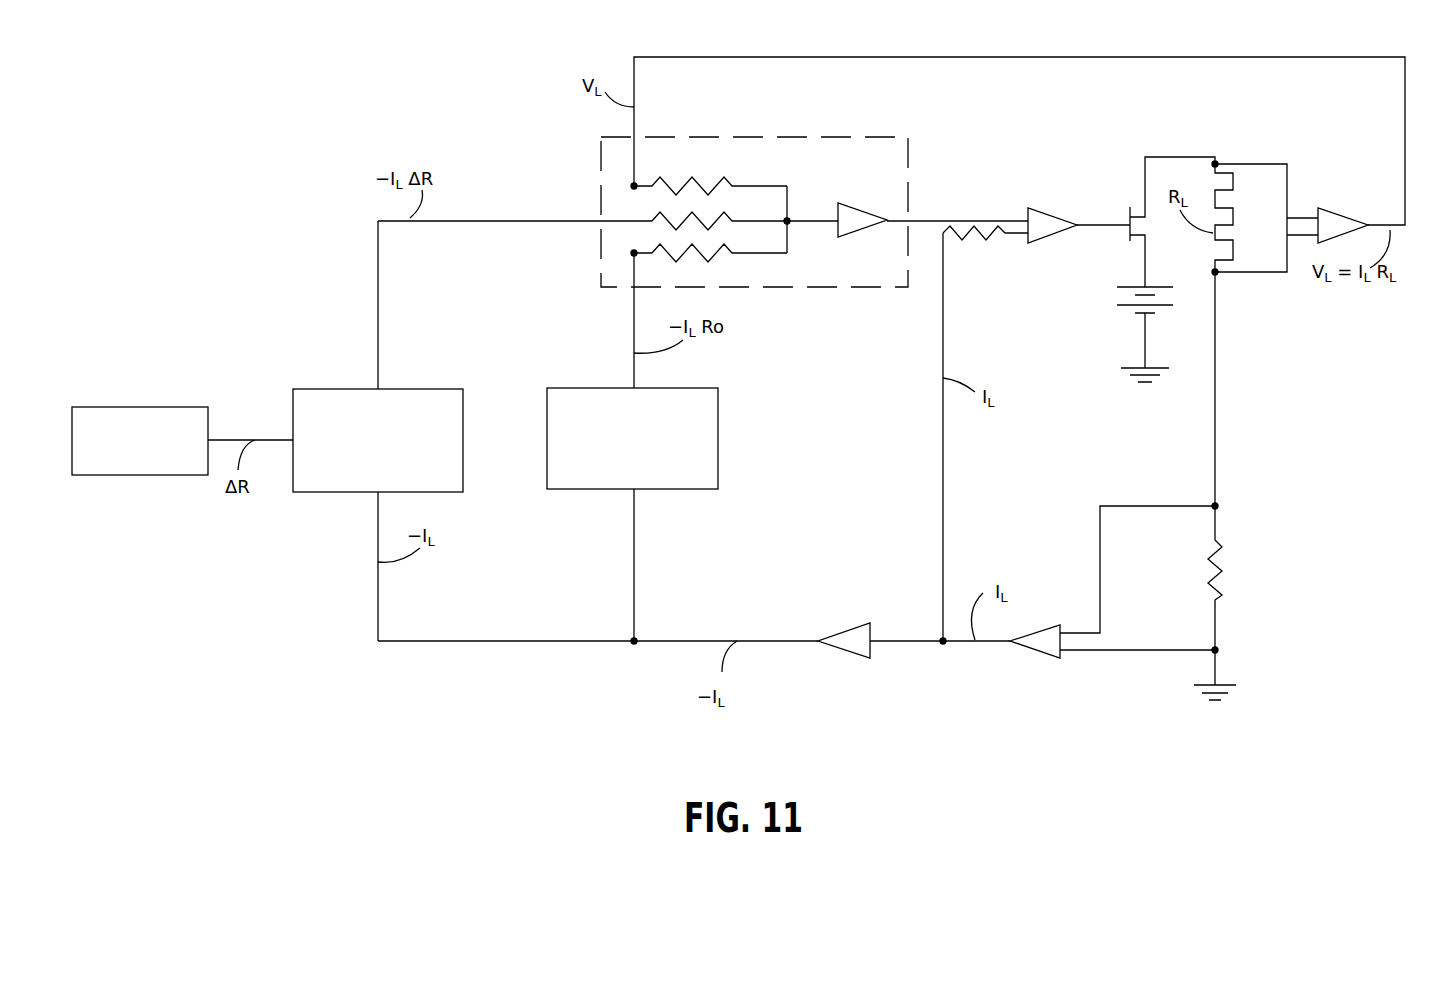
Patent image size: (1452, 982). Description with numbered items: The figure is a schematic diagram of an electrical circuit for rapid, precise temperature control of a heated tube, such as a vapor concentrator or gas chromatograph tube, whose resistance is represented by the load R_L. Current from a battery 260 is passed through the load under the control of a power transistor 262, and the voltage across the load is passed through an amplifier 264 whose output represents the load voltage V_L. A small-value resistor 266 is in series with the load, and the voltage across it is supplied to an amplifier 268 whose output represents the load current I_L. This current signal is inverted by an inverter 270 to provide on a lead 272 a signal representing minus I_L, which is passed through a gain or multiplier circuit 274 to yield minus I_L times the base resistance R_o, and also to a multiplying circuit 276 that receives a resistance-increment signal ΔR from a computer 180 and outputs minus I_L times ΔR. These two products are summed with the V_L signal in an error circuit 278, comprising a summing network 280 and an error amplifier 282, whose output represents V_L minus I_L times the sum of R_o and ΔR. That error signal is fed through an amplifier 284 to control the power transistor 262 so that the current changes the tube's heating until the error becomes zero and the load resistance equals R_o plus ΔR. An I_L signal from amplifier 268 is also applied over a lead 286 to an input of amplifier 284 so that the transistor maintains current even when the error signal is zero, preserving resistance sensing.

The computer 180 is at (166, 406).
The multiplying circuit 276 is at (336, 388).
The gain or multiplier circuit 274 is at (557, 388).
The error circuit 278 is at (600, 150).
The summing network 280 is at (632, 205).
The error amplifier 282 is at (870, 215).
The amplifier 284 is at (1050, 210).
The power transistor 262 is at (1128, 218).
The battery 260 is at (1124, 304).
The amplifier 264 is at (1347, 218).
The resistor 266 is at (1221, 556).
The amplifier 268 is at (1042, 655).
The inverter 270 is at (838, 652).
The lead 272 is at (650, 640).
The lead 286 is at (943, 522).